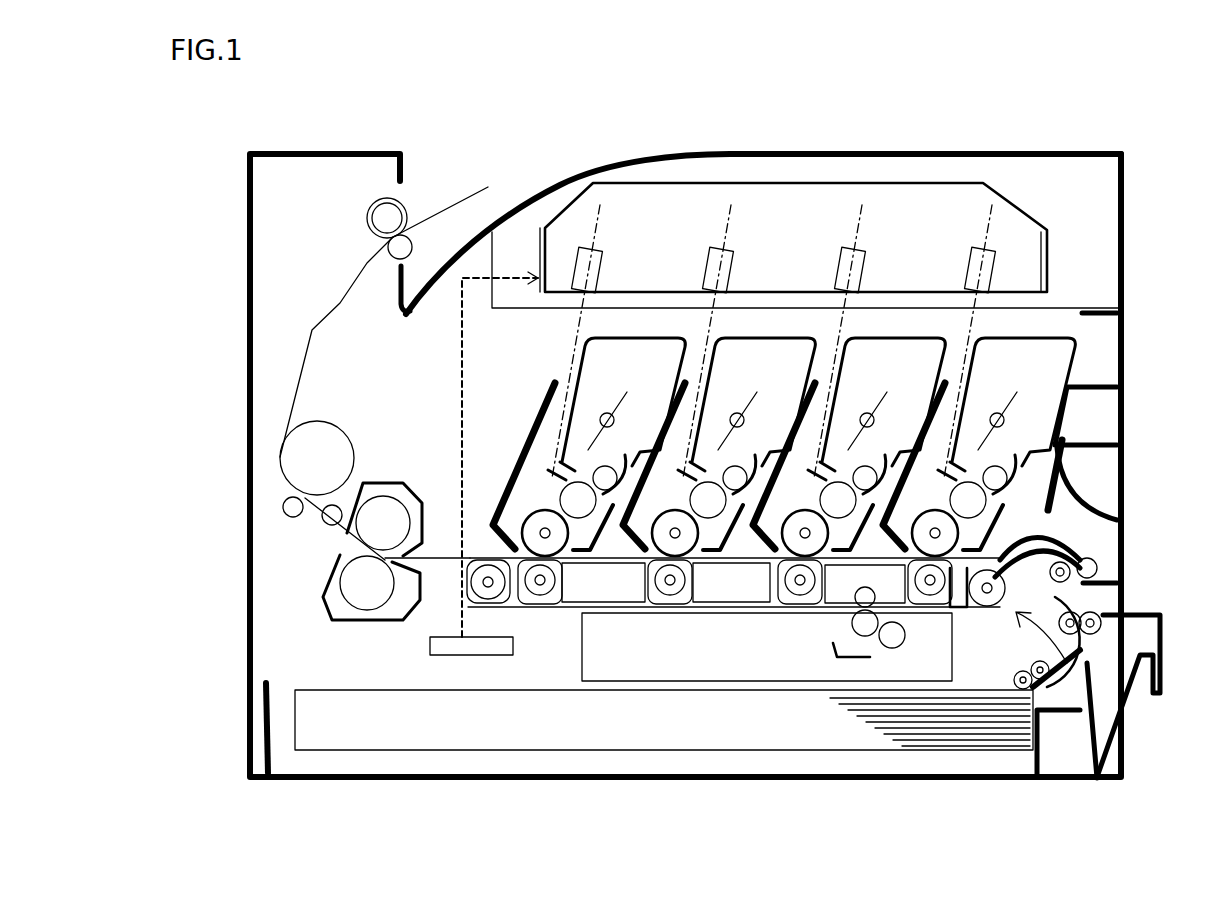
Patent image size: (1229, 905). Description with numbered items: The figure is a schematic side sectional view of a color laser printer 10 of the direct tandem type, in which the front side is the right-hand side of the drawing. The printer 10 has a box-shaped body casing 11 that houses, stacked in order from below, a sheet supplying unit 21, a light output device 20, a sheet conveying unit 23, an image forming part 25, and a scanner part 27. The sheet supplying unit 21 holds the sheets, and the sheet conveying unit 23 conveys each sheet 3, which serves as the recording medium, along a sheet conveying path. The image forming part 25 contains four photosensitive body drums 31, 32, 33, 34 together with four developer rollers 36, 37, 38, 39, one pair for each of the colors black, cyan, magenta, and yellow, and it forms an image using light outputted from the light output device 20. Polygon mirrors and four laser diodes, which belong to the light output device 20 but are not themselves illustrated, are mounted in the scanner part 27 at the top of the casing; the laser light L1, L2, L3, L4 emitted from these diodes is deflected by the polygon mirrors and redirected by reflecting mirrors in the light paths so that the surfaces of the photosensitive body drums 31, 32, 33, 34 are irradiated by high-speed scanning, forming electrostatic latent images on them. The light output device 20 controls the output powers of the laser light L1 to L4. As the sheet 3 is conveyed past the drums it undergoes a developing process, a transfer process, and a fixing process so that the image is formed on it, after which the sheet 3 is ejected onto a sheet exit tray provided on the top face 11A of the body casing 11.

The color laser printer 10 is at (320, 141).
The body casing 11 is at (247, 488).
The top face 11A is at (697, 153).
The sheet 3 is at (297, 373).
The image forming part 25 is at (505, 450).
The scanner part 27 is at (793, 289).
The laser light L1 is at (990, 235).
The laser light L2 is at (860, 227).
The laser light L3 is at (728, 227).
The laser light L4 is at (597, 227).
The developer roller 36 is at (967, 493).
The developer roller 37 is at (837, 493).
The developer roller 38 is at (707, 493).
The developer roller 39 is at (577, 493).
The photosensitive body drum 31 is at (935, 535).
The photosensitive body drum 32 is at (805, 540).
The photosensitive body drum 33 is at (675, 533).
The photosensitive body drum 34 is at (545, 533).
The sheet supplying unit 21 is at (815, 753).
The light output device 20 is at (465, 655).
The sheet conveying unit 23 is at (1085, 658).